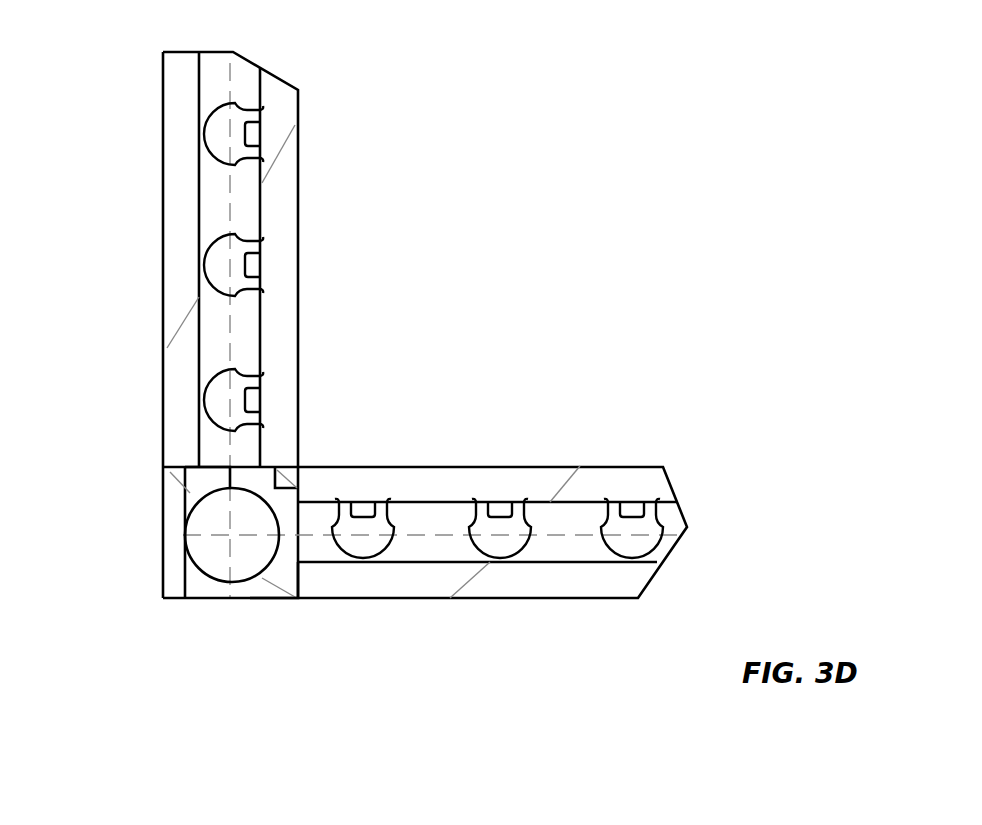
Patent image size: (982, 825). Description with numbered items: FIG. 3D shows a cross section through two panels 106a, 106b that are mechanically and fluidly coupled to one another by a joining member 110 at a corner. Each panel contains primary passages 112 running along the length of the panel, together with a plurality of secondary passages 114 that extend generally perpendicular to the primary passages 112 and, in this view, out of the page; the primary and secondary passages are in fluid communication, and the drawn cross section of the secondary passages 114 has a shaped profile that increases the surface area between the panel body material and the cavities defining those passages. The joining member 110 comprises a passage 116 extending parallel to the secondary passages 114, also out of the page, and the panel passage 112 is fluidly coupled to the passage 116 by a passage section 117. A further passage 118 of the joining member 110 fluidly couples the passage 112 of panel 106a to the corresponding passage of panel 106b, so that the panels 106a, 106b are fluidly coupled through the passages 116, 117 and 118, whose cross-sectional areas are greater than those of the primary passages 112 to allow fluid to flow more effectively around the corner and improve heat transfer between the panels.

The panel 106a is at (185, 273).
The panel 106b is at (628, 483).
The joining member 110 is at (177, 577).
The primary passage 112 is at (240, 80).
The secondary passage 114 is at (230, 402).
The passage 116 is at (228, 536).
The passage section 117 is at (200, 483).
The passage 118 is at (285, 558).